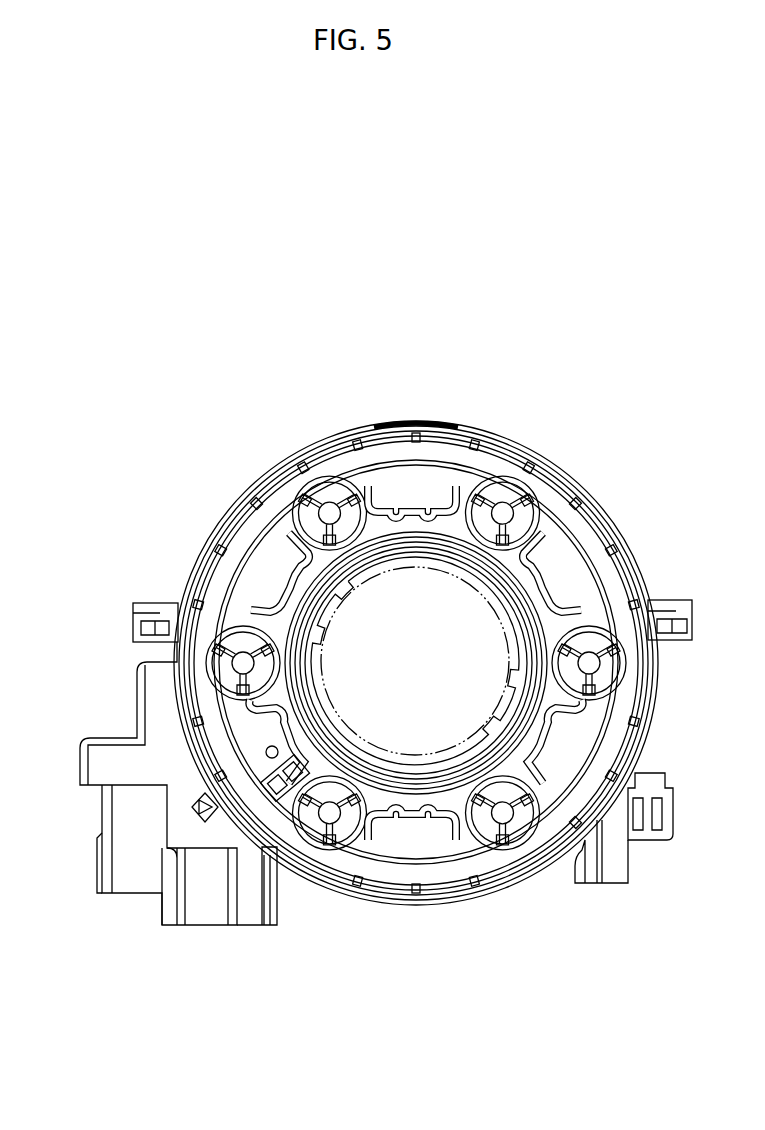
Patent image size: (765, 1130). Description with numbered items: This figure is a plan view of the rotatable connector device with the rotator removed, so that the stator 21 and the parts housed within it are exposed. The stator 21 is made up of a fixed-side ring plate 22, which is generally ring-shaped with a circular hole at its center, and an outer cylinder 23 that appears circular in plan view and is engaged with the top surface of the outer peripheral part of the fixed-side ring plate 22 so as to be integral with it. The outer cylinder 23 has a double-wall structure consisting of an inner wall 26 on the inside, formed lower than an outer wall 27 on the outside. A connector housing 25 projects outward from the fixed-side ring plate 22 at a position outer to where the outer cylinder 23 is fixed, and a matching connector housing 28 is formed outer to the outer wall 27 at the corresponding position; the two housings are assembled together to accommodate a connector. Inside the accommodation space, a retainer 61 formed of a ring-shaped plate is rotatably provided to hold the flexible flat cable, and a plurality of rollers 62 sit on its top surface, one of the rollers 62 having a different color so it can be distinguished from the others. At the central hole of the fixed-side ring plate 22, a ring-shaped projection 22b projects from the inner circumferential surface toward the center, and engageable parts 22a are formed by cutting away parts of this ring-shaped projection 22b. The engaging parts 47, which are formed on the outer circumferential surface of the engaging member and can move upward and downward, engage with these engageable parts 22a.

The stator 21 is at (408, 1040).
The fixed-side ring plate 22 is at (422, 930).
The engageable parts 22a is at (328, 592).
The ring-shaped projection 22b is at (467, 583).
The outer cylinder 23 is at (352, 915).
The connector housing 25 is at (80, 748).
The inner wall 26 is at (253, 480).
The outer wall 27 is at (222, 518).
The connector housing 28 is at (125, 762).
The engaging parts 47 is at (325, 655).
The retainer 61 is at (570, 537).
The rollers 62 is at (537, 800).